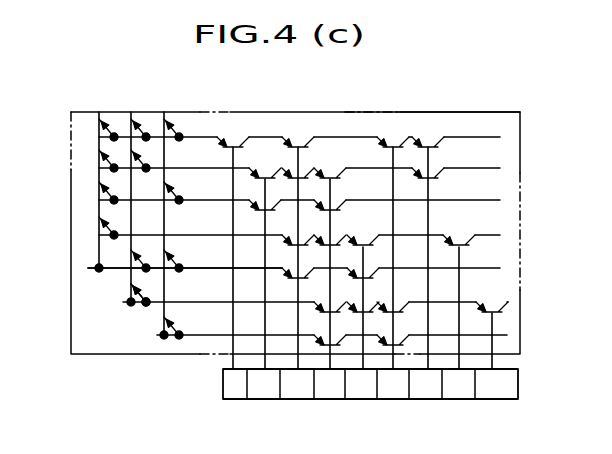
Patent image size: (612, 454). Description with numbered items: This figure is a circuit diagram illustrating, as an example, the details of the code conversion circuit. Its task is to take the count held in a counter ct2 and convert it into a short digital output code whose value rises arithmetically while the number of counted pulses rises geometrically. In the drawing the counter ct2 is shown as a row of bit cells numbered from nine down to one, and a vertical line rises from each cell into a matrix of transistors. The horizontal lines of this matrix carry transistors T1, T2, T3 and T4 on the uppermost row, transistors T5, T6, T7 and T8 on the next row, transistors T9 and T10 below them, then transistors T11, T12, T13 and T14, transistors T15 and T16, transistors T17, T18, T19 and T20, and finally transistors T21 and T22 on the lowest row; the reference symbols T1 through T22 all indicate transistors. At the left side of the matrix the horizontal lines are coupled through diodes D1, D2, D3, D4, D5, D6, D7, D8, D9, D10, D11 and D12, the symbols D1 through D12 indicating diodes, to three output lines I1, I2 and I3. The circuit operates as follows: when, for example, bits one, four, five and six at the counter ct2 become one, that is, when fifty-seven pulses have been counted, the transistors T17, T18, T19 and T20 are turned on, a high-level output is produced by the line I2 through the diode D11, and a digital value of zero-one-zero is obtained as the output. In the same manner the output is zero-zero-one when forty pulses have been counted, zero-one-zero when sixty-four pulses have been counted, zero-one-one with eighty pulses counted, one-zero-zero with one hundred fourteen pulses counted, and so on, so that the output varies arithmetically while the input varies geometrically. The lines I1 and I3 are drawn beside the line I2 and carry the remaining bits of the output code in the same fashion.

The diode D1 is at (181, 128).
The diode D2 is at (146, 130).
The diode D3 is at (112, 128).
The diode D4 is at (111, 150).
The diode D5 is at (140, 160).
The diode D6 is at (107, 188).
The diode D7 is at (180, 192).
The diode D8 is at (107, 230).
The diode D9 is at (148, 263).
The diode D10 is at (88, 268).
The diode D11 is at (132, 290).
The diode D12 is at (172, 318).
The line I1 is at (97, 275).
The line I2 is at (132, 307).
The line I3 is at (163, 337).
The transistor T1 is at (233, 143).
The transistor T2 is at (298, 143).
The transistor T3 is at (393, 145).
The transistor T4 is at (428, 145).
The transistor T5 is at (265, 177).
The transistor T6 is at (300, 178).
The transistor T7 is at (333, 178).
The transistor T8 is at (430, 177).
The transistor T9 is at (262, 203).
The transistor T10 is at (332, 210).
The transistor T11 is at (297, 243).
The transistor T12 is at (328, 243).
The transistor T13 is at (366, 246).
The transistor T14 is at (462, 242).
The transistor T15 is at (298, 278).
The transistor T16 is at (366, 279).
The transistor T17 is at (327, 306).
The transistor T18 is at (360, 308).
The transistor T19 is at (397, 306).
The transistor T20 is at (495, 307).
The transistor T21 is at (333, 343).
The transistor T22 is at (397, 343).
The counter ct2 is at (466, 400).